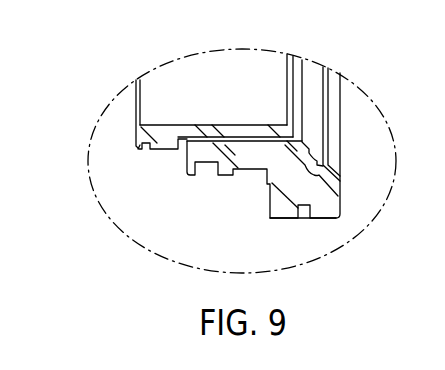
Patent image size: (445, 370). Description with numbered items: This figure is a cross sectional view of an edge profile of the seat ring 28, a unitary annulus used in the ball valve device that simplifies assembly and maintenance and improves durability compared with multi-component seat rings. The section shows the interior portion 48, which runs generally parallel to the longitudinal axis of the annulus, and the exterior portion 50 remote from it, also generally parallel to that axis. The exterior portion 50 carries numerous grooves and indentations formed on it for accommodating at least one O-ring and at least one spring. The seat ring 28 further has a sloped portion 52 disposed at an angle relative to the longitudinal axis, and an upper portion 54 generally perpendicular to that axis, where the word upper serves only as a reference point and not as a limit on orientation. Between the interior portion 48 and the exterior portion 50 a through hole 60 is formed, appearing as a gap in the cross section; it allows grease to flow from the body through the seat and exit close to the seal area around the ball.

The seat ring 28 is at (241, 67).
The interior portion 48 is at (177, 101).
The exterior portion 50 is at (182, 243).
The sloped portion 52 is at (320, 136).
The upper portion 54 is at (340, 199).
The through hole 60 is at (249, 147).